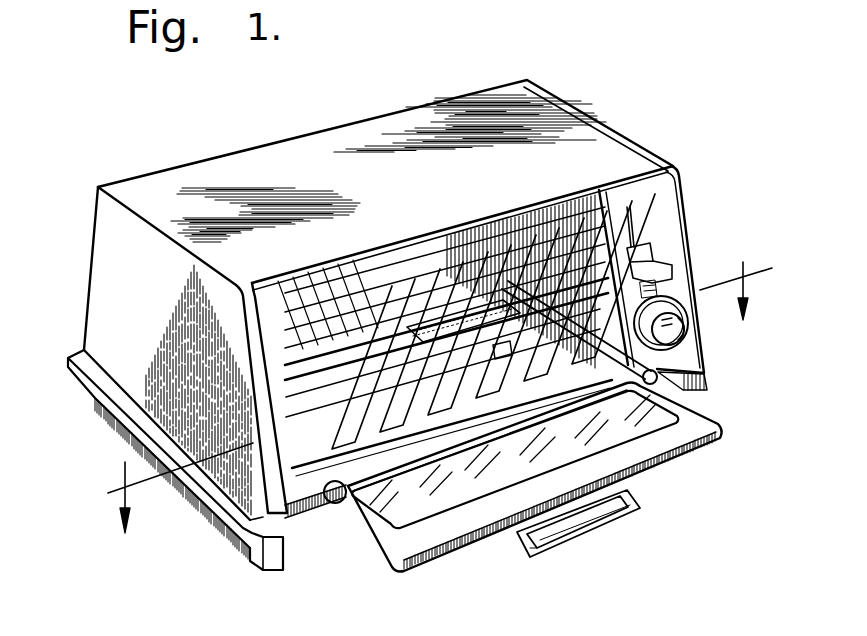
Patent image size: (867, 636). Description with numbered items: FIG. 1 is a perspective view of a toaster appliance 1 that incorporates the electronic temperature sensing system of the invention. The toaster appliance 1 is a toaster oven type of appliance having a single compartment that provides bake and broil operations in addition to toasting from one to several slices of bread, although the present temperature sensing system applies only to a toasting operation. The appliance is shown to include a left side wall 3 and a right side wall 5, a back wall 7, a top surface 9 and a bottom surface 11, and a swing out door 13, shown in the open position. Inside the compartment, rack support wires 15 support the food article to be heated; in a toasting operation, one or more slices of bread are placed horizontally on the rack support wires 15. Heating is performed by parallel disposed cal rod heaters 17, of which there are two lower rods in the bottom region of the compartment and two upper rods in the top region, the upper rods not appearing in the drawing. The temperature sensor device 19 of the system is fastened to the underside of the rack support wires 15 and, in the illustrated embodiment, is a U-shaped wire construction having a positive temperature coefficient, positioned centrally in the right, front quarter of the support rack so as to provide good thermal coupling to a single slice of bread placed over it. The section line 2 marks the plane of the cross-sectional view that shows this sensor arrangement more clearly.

The toaster appliance 1 is at (366, 106).
The section line 2- 2 is at (434, 382).
The left side wall 3 is at (104, 231).
The right side wall 5 is at (630, 140).
The back wall 7 is at (88, 272).
The top surface 9 is at (478, 100).
The bottom surface 11 is at (295, 492).
The swing out door 13 is at (447, 560).
The rack support wires 15 is at (348, 298).
The cal rod heaters 17 is at (337, 377).
The temperature sensor device 19 is at (512, 358).